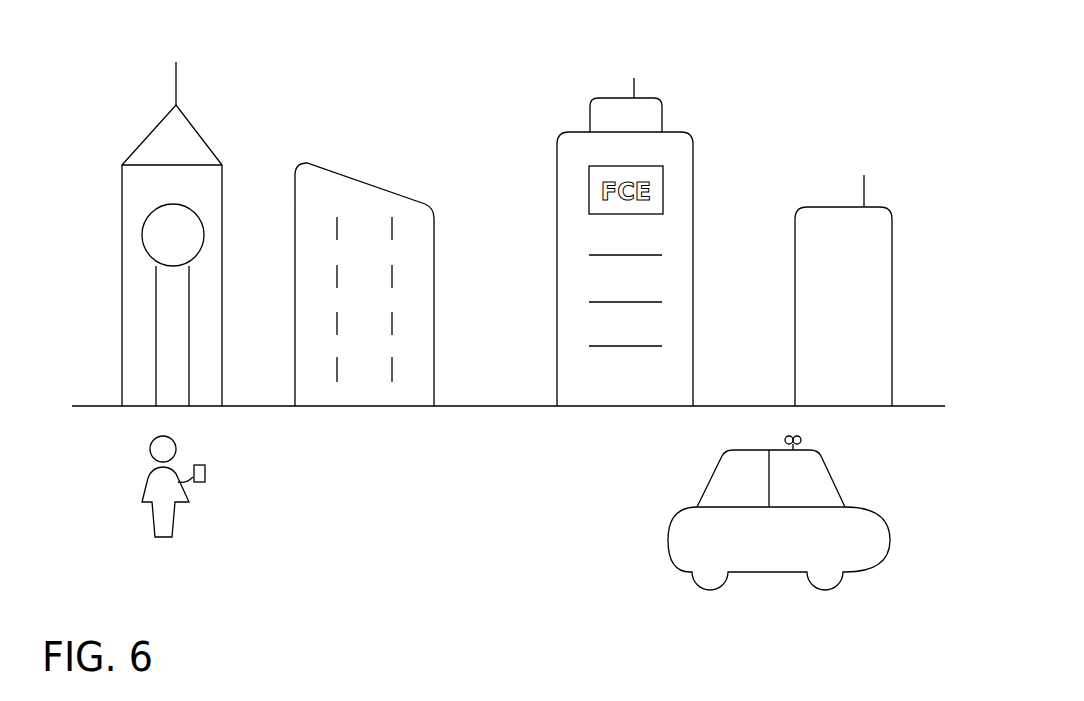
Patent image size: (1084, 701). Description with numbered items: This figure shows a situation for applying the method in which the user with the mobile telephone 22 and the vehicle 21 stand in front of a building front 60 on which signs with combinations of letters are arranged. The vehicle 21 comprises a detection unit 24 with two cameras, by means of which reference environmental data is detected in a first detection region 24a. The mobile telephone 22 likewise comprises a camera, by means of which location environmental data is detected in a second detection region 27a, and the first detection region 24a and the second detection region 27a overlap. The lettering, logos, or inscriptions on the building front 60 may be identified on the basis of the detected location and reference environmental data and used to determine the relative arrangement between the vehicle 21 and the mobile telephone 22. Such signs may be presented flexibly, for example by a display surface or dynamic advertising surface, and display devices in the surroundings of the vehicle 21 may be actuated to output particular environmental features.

The vehicle 21 is at (649, 567).
The mobile telephone 22 is at (222, 494).
The detection unit 24 is at (820, 440).
The first detection region 24a is at (845, 128).
The second detection region 27a is at (201, 421).
The building front 60 is at (348, 134).